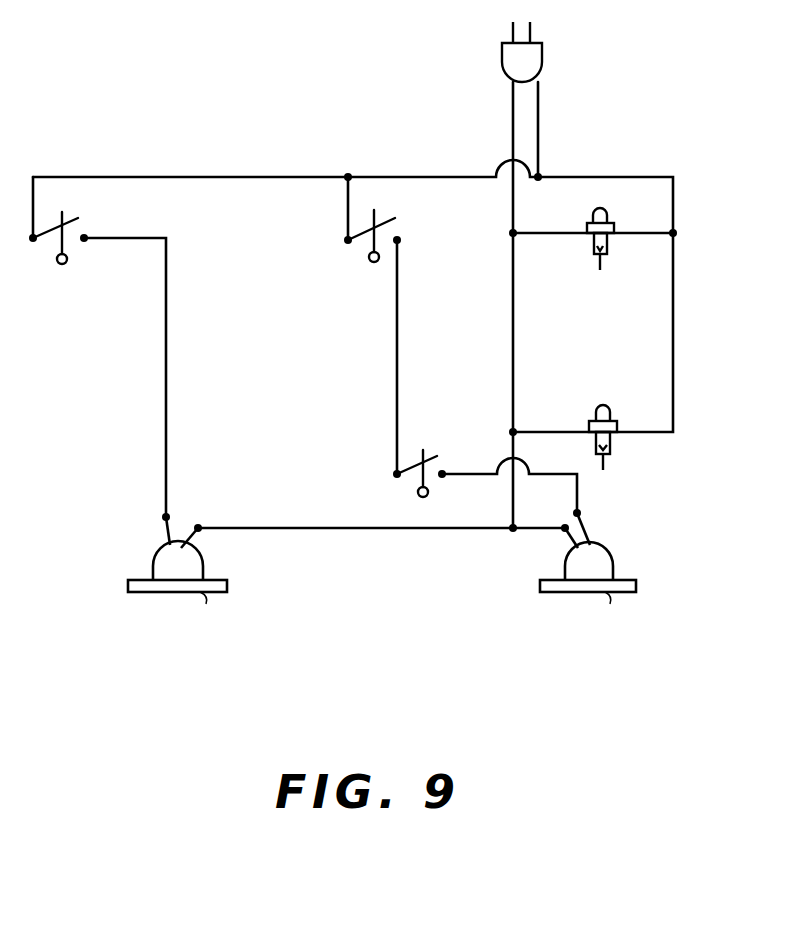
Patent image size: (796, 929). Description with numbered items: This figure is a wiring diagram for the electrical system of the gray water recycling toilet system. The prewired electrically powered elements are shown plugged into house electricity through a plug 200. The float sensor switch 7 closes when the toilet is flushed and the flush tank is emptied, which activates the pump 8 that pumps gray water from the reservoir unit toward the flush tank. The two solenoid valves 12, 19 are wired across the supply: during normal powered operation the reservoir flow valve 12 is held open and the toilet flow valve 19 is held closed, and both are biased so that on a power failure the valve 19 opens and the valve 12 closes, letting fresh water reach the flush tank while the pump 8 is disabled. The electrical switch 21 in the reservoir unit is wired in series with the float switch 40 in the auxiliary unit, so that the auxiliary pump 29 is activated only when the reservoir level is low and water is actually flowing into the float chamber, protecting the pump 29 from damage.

The power plug 200 is at (545, 62).
The float sensor switch 7 is at (33, 242).
The electrical switch 21 is at (345, 242).
The electrical float switch 40 is at (396, 478).
The solenoid valve 12 is at (617, 222).
The solenoid valve 19 is at (632, 408).
The pump 8 is at (177, 573).
The pump 29 is at (588, 571).